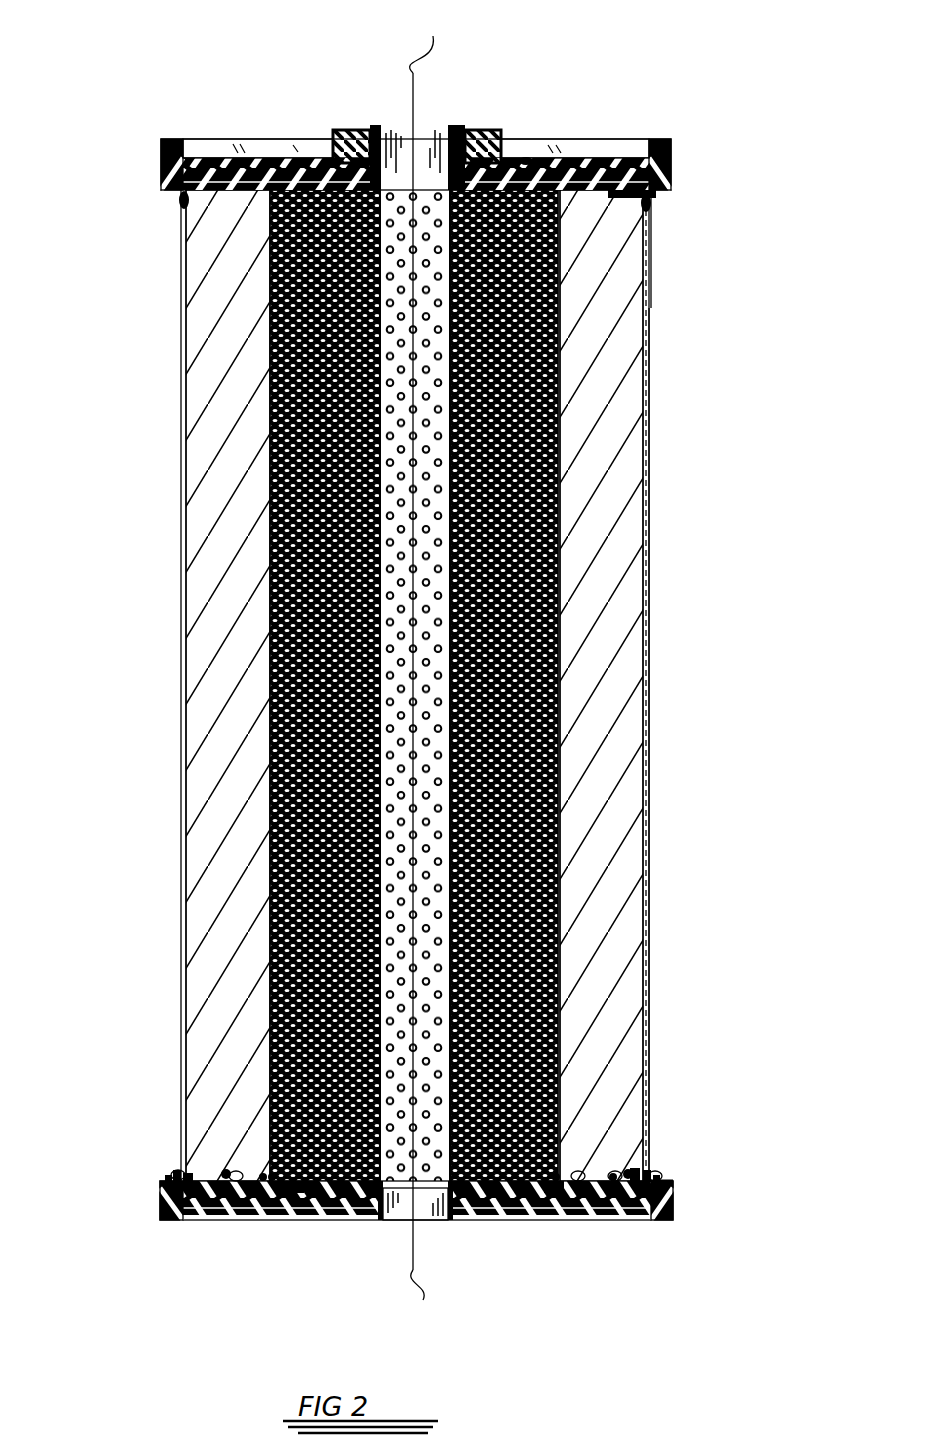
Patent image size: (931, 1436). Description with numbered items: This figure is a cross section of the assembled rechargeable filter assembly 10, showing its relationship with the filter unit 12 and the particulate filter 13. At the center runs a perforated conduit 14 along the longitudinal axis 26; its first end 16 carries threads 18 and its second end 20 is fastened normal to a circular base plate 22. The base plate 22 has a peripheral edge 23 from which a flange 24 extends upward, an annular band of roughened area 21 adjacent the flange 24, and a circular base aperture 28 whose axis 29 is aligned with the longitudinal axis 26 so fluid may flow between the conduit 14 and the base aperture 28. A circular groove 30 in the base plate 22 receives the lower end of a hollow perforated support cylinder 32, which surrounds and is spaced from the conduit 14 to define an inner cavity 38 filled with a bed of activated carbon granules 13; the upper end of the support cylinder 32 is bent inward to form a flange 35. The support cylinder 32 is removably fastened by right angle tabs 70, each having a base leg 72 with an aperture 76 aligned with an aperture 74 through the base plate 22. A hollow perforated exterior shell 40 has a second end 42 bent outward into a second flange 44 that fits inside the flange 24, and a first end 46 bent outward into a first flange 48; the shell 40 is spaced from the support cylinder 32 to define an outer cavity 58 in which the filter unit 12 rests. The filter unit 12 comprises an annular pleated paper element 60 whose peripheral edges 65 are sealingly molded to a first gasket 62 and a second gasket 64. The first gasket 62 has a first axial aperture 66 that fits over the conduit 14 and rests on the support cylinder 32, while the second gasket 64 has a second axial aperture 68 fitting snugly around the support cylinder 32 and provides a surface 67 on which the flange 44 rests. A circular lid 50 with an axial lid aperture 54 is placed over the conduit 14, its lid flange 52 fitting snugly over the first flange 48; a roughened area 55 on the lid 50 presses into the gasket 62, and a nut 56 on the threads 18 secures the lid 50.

The rechargeable filter assembly 10 is at (648, 392).
The filter unit 12 is at (597, 464).
The particulate filter 13 is at (550, 517).
The perforated conduit 14 is at (550, 547).
The first end 16 is at (448, 118).
The threads 18 is at (356, 118).
The second end 20 is at (470, 1212).
The roughened area 21 is at (180, 1212).
The base plate 22 is at (668, 1193).
The peripheral edge 23 is at (155, 1180).
The flange 24 is at (655, 1178).
The longitudinal axis 26 is at (441, 667).
The base aperture 28 is at (396, 1215).
The axis 29 is at (403, 1275).
The circular groove 30 is at (262, 1210).
The support cylinder 32 is at (550, 692).
The flange 35 is at (250, 150).
The inner cavity 38 is at (550, 597).
The exterior shell 40 is at (640, 610).
The second end 42 is at (627, 1165).
The second flange 44 is at (169, 1165).
The first end 46 is at (645, 215).
The first flange 48 is at (648, 186).
The lid 50 is at (660, 134).
The lid flange 52 is at (155, 168).
The lid aperture 54 is at (345, 125).
The roughened area 55 is at (268, 150).
The nut 56 is at (475, 135).
The outer cavity 58 is at (605, 745).
The pleated paper element 60 is at (605, 780).
The first gasket 62 is at (218, 140).
The second gasket 64 is at (180, 1168).
The peripheral edges 65 is at (176, 196).
The first axial aperture 66 is at (518, 152).
The surface 67 is at (162, 1170).
The second axial aperture 68 is at (255, 1210).
The right angle tab 70 is at (255, 1162).
The base leg 72 is at (280, 1185).
The aperture 74 is at (292, 1185).
The aperture 76 is at (286, 1185).